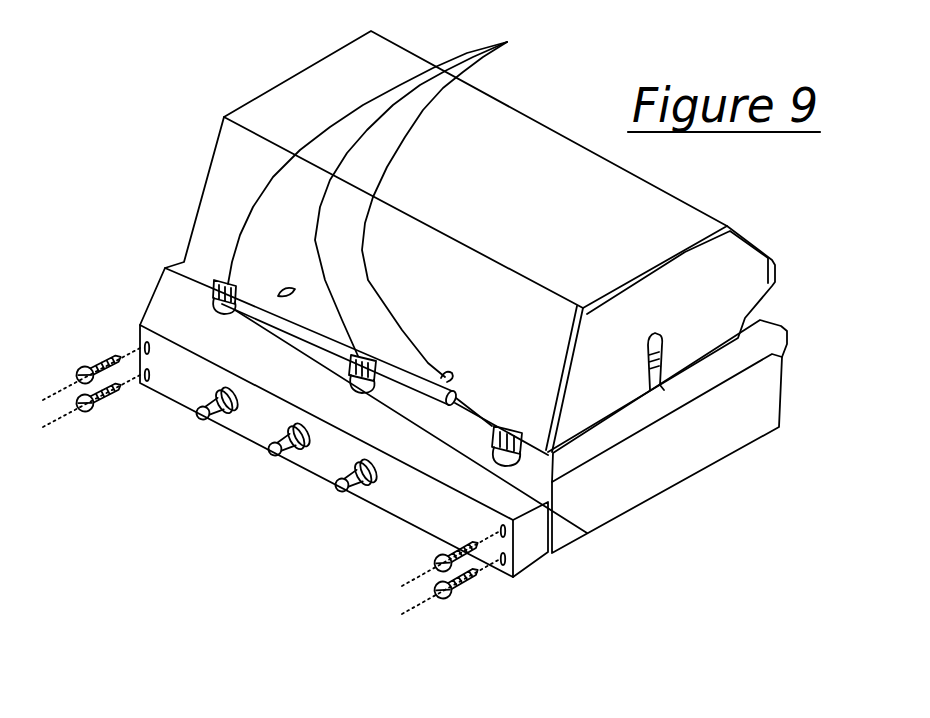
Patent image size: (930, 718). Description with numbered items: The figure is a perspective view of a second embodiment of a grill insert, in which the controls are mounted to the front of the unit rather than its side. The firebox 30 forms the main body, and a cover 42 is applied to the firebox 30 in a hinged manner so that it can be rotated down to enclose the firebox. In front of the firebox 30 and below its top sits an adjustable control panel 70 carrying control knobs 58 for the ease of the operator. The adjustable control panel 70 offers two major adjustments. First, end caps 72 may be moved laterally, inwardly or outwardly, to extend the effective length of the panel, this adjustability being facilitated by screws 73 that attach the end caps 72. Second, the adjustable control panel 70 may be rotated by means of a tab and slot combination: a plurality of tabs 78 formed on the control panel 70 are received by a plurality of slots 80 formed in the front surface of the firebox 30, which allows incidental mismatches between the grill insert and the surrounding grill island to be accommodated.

The firebox 30 is at (737, 417).
The cover 42 is at (315, 100).
The control knobs 58 is at (335, 487).
The adjustable control panel 70 is at (173, 388).
The end caps 72 is at (175, 292).
The screws 73 is at (78, 382).
The tabs 78 is at (507, 42).
The slots 80 is at (520, 502).